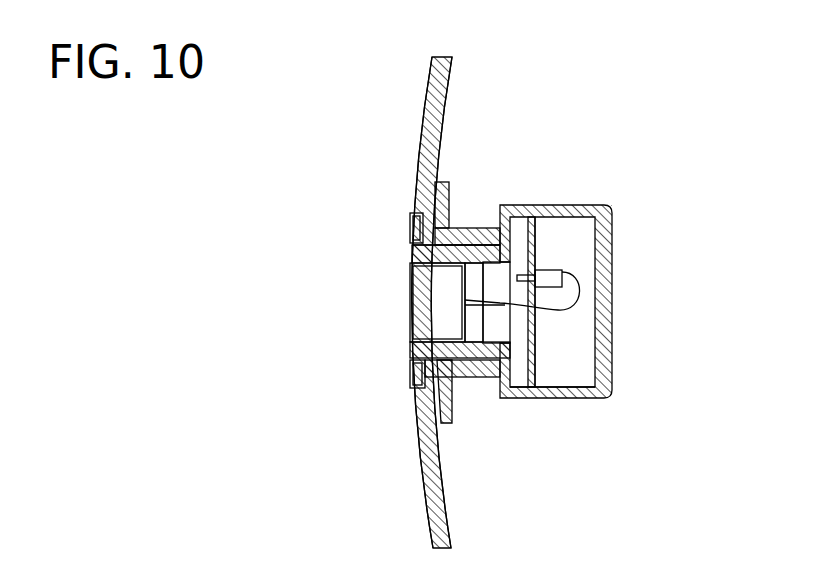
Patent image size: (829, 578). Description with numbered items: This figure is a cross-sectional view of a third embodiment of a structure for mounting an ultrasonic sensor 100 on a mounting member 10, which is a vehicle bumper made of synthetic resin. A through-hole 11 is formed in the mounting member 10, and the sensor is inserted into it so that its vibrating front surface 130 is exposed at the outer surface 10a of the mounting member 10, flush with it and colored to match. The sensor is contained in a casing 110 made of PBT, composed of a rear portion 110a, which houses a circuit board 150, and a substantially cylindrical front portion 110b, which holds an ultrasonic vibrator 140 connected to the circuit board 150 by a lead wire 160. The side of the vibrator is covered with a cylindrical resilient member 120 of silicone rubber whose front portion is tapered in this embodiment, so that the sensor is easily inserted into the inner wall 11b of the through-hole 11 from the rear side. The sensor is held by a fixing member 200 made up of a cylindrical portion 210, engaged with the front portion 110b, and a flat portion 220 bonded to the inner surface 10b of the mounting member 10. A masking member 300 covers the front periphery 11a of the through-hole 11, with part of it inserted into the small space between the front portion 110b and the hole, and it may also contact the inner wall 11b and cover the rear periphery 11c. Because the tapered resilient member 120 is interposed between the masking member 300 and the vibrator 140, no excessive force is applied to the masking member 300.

The mounting member 10 is at (430, 125).
The outer surface of mounting member 10a is at (428, 80).
The inner surface of mounting member 10b is at (450, 66).
The through-hole 11 is at (400, 332).
The front periphery of through-hole 11a is at (420, 213).
The inner wall of through-hole 11b is at (416, 392).
The rear periphery of through-hole 11c is at (424, 440).
The ultrasonic sensor 100 is at (570, 312).
The casing 110 is at (610, 296).
The rear portion of casing 110a is at (565, 400).
The front portion of casing 110b is at (478, 364).
The cylindrical resilient member 120 is at (415, 252).
The vibrating front surface 130 is at (412, 292).
The ultrasonic vibrator 140 is at (430, 323).
The circuit board 150 is at (533, 242).
The lead wire 160 is at (597, 312).
The fixing member 200 is at (427, 210).
The cylindrical portion of fixing member 210 is at (478, 233).
The flat portion of fixing member 220 is at (452, 195).
The masking member 300 is at (402, 232).